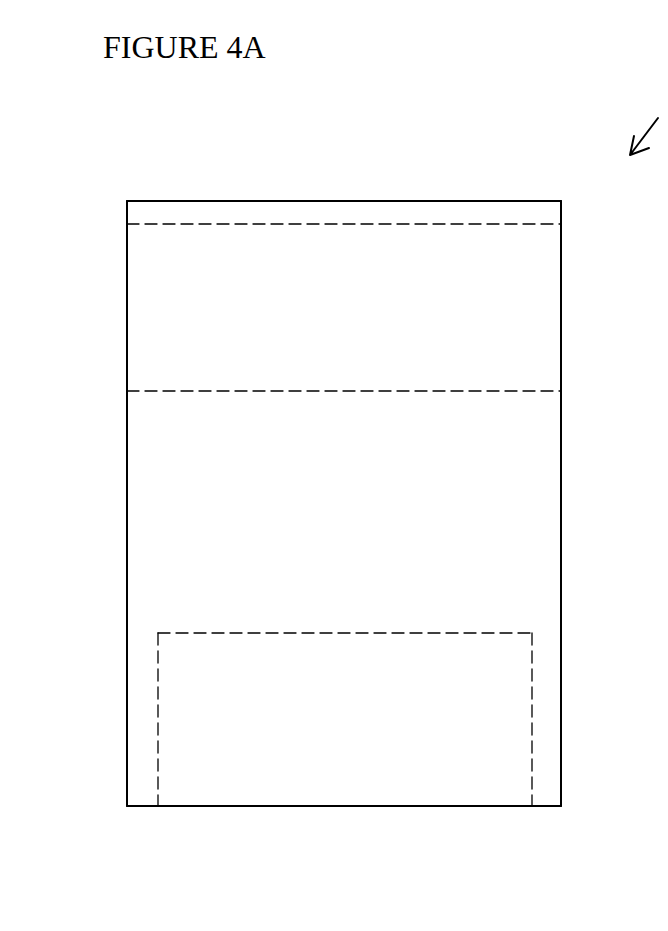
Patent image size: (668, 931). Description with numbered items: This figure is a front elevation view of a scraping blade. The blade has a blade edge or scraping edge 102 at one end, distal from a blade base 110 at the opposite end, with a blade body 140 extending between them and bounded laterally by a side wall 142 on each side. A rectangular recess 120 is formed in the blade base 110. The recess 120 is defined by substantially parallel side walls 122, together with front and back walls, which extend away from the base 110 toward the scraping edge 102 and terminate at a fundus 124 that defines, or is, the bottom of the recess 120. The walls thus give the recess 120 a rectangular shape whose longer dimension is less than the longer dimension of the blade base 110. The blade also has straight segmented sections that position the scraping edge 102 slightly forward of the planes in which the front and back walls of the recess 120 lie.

The scraping edge 102 is at (362, 200).
The blade base 110 is at (335, 509).
The rectangular recess 120 is at (268, 806).
The side walls 122 is at (158, 718).
The fundus 124 is at (330, 633).
The blade body 140 is at (545, 457).
The side wall 142 is at (128, 532).